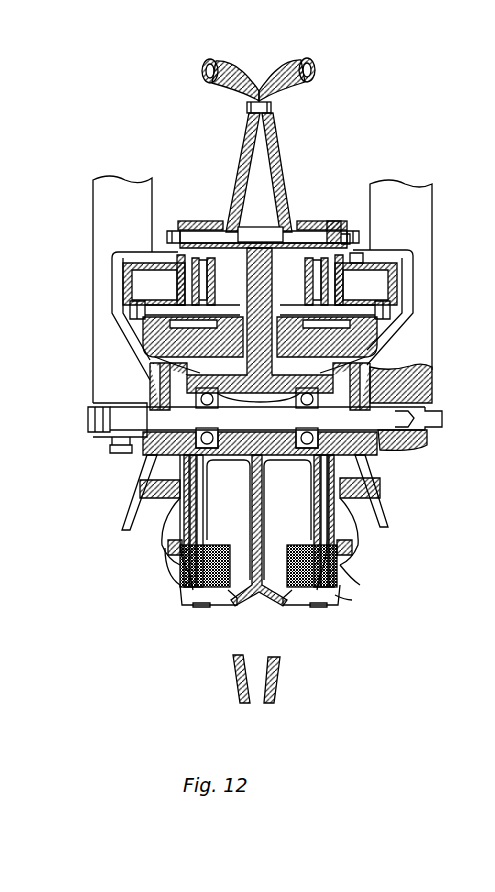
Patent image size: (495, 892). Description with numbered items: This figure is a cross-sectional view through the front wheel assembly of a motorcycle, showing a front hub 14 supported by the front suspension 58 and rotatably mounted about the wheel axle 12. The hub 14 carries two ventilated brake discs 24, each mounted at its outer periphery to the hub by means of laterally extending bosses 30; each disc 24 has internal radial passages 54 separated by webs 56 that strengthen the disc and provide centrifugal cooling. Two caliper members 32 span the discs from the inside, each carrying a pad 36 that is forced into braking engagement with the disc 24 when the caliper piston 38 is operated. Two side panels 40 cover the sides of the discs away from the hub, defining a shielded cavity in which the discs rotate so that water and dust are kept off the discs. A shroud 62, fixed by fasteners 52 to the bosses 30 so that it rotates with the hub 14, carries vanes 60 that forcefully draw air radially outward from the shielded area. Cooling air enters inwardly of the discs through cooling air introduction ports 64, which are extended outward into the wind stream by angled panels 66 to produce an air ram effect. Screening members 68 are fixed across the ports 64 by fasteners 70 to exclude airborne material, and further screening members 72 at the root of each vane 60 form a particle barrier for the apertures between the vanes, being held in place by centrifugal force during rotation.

The wheel axle 12 is at (438, 418).
The wheel hub 14 is at (290, 76).
The brake disc 24 is at (315, 520).
The boss 30 is at (311, 232).
The caliper member 32 is at (397, 315).
The pad 36 is at (355, 257).
The caliper piston 38 is at (400, 280).
The side panel 40 is at (350, 483).
The fastener 52 is at (346, 244).
The radial passage 54 is at (317, 500).
The web 56 is at (270, 490).
The front suspension 58 is at (98, 204).
The vane 60 is at (302, 606).
The shroud 62 is at (333, 226).
The cooling air introduction port 64 is at (357, 522).
The angled panel 66 is at (390, 516).
The screening member 68 is at (352, 528).
The fastener 70 is at (170, 553).
The screening member 72 is at (218, 547).